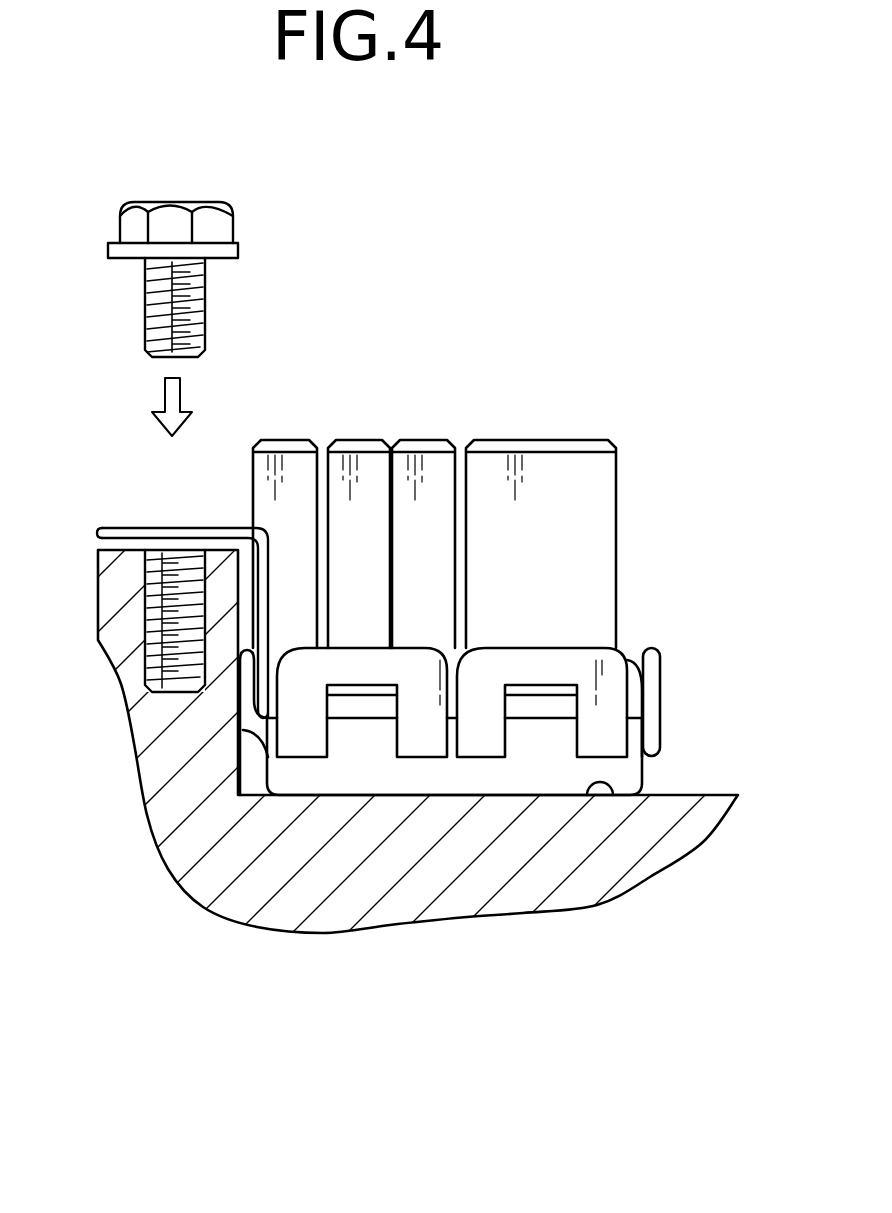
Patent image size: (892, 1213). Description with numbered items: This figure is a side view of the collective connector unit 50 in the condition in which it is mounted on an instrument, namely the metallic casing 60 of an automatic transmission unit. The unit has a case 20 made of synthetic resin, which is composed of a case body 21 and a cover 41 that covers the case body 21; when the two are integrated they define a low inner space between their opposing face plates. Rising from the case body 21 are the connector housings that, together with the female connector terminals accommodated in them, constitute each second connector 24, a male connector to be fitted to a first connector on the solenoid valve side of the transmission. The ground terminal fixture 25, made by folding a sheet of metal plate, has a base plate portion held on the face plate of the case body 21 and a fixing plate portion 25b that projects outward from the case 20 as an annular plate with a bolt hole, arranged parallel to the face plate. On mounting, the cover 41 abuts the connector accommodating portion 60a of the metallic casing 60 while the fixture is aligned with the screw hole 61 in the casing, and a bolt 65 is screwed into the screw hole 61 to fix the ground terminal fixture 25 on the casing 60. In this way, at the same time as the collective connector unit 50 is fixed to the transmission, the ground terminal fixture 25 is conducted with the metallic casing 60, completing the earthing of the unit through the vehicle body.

The bolt 65 is at (235, 223).
The second connector 24 is at (346, 440).
The collective connector unit 50 is at (667, 534).
The ground terminal fixture 25 is at (200, 529).
The fixing plate portion 25b is at (127, 525).
The screw hole 61 is at (147, 617).
The case body 21 is at (633, 695).
The cover 41 is at (628, 742).
The case 20 is at (767, 635).
The metallic casing 60 is at (270, 932).
The connector accommodating portion 60a is at (613, 797).